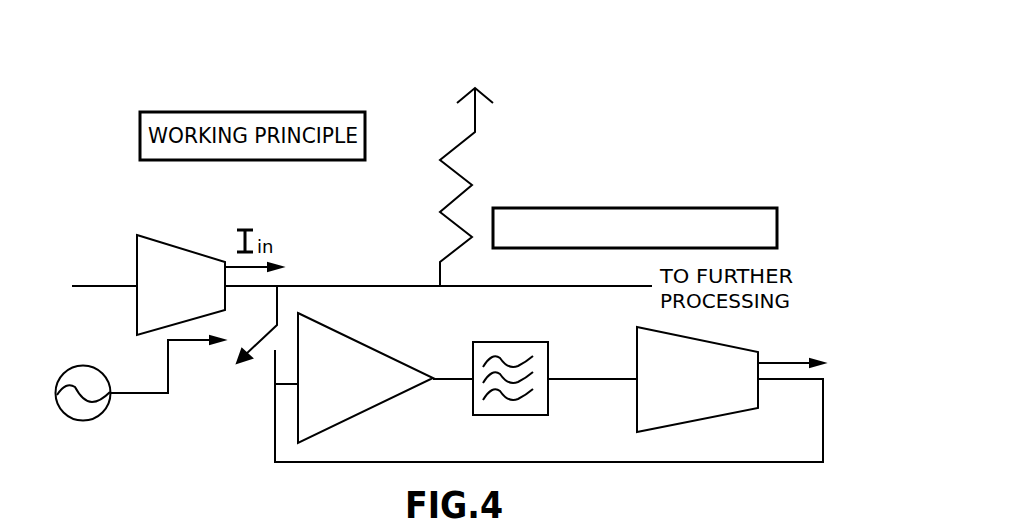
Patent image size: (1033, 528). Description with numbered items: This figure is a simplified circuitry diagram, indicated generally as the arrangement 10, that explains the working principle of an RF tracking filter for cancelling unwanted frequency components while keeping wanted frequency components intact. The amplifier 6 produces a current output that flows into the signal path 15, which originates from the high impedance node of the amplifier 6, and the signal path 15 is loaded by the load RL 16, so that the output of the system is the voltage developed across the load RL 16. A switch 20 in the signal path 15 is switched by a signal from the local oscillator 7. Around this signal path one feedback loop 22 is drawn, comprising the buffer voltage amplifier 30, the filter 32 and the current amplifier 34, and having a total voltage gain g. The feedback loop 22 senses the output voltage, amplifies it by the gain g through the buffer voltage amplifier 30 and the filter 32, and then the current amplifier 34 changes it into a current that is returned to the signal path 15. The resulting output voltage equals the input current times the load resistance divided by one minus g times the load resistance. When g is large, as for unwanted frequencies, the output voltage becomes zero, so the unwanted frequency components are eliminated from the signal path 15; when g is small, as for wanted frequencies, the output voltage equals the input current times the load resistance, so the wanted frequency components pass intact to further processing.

The amplifier 6 is at (202, 248).
The local oscillator 7 is at (82, 365).
The amplifier arrangement 10 is at (620, 170).
The signal path 15 is at (310, 286).
The load RL 16 is at (457, 143).
The switch 20 is at (263, 342).
The feedback loop 22 is at (640, 462).
The buffer voltage amplifier 30 is at (357, 338).
The filter 32 is at (500, 342).
The current amplifier 34 is at (727, 345).